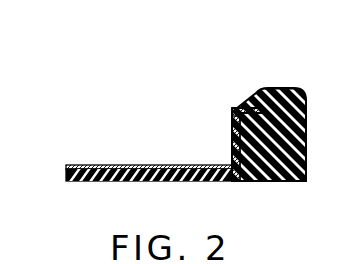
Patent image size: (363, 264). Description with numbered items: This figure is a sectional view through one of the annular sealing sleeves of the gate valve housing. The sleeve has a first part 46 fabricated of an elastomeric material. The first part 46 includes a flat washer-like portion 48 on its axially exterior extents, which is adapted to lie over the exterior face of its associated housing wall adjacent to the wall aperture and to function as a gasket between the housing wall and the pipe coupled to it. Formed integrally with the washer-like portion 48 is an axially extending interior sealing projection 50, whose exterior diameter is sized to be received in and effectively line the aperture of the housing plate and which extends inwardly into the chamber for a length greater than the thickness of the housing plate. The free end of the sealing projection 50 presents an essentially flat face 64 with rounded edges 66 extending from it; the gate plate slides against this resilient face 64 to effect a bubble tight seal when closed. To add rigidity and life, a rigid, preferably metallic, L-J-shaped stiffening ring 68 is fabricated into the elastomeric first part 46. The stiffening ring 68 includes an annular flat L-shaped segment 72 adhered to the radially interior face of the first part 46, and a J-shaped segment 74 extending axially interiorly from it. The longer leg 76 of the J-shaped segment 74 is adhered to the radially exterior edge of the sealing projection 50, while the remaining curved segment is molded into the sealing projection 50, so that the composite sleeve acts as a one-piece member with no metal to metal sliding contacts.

The first part 46 is at (307, 168).
The washer-like portion 48 is at (100, 182).
The sealing projection 50 is at (300, 90).
The free end face 64 is at (248, 93).
The rounded edges 66 is at (268, 90).
The stiffening ring 68 is at (144, 171).
The L-shaped segment 72 is at (82, 165).
The J-shaped segment 74 is at (240, 103).
The longer leg 76 is at (232, 140).